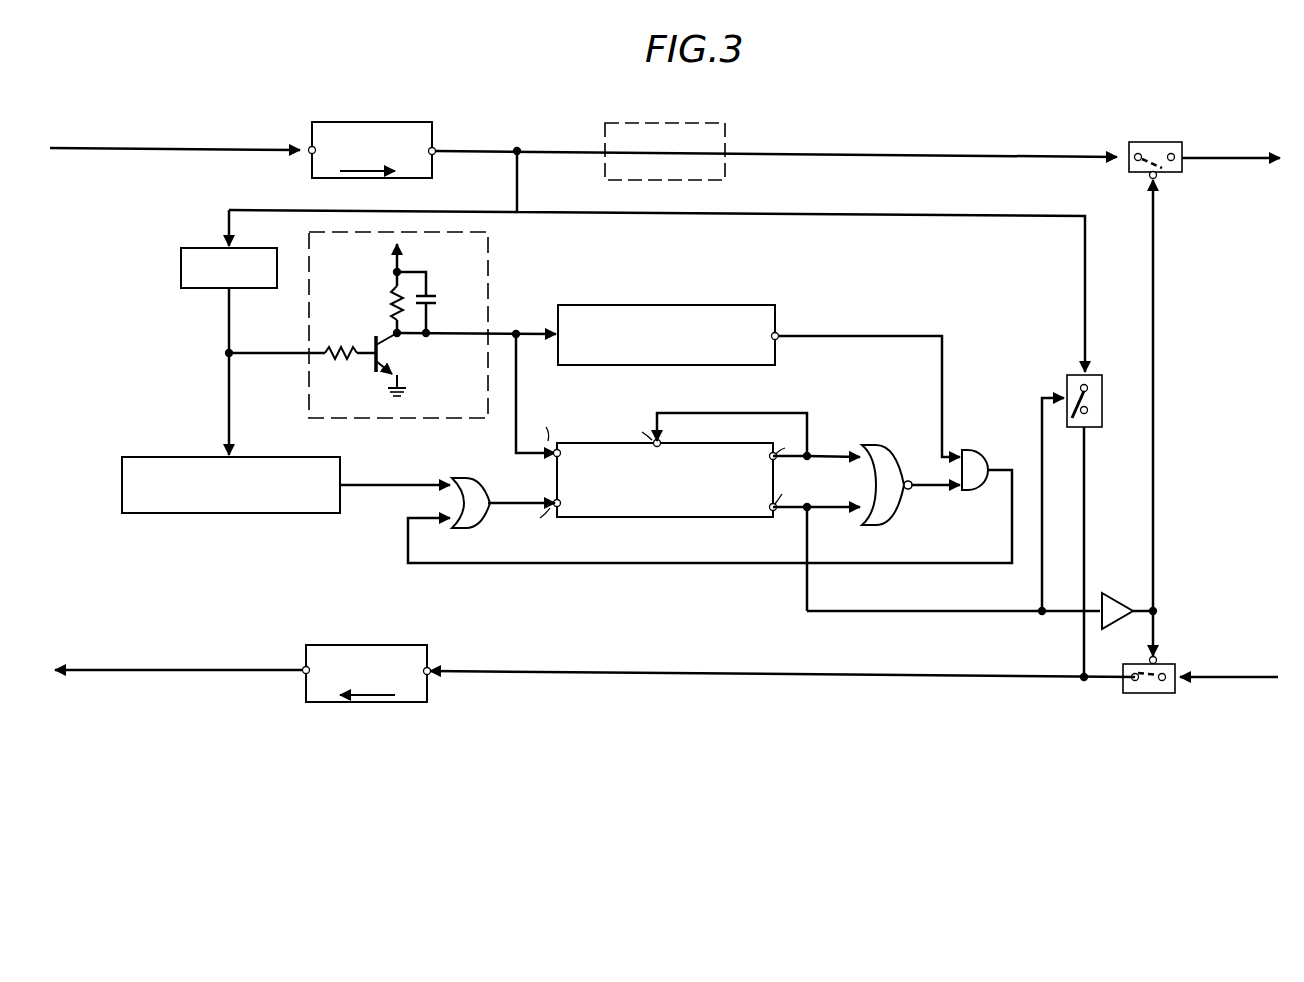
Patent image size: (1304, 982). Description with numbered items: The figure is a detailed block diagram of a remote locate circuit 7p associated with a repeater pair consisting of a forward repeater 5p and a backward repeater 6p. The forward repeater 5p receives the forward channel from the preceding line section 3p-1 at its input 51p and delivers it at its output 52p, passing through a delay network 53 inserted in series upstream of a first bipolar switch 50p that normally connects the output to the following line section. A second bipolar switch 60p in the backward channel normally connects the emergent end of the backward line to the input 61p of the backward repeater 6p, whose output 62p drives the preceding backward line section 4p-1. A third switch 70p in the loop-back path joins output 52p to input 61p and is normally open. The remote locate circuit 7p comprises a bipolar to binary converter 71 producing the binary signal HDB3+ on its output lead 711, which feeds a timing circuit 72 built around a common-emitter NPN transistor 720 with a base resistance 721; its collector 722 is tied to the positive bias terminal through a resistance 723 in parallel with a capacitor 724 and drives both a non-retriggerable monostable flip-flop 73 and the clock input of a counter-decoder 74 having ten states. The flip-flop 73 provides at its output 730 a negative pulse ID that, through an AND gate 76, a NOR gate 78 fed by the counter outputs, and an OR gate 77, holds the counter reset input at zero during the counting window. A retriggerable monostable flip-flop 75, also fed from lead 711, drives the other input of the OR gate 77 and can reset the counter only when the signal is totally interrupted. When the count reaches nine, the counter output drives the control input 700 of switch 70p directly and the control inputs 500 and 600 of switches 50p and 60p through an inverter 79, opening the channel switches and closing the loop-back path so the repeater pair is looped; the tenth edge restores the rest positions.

The preceding forward line section 3p-1 is at (82, 142).
The preceding backward line section 4p-1 is at (80, 668).
The forward repeater 5p is at (364, 121).
The forward repeater input 51p is at (306, 146).
The forward repeater output 52p is at (436, 146).
The delay network 53 is at (676, 124).
The first bipolar switch 50p is at (1148, 142).
The control input of switch 50p 500 is at (1158, 178).
The backward repeater 6p is at (358, 644).
The backward repeater input 61p is at (430, 666).
The backward repeater output 62p is at (302, 668).
The second bipolar switch 60p is at (1166, 694).
The control input of switch 60p 600 is at (1156, 656).
The remote locate circuit 7p is at (776, 275).
The bipolar to binary converter 71 is at (181, 268).
The output lead of converter 711 is at (228, 333).
The timing circuit 72 is at (378, 325).
The NPN bipolar transistor 720 is at (396, 350).
The base resistance 721 is at (340, 337).
The collector 722 is at (392, 326).
The resistance 723 is at (392, 294).
The capacitor 724 is at (432, 302).
The non-retriggerable monostable flip-flop 73 is at (664, 296).
The monostable output 730 is at (778, 334).
The counter-decoder 74 is at (676, 530).
The retriggerable monostable flip-flop 75 is at (254, 516).
The AND gate 76 is at (976, 456).
The OR gate 77 is at (470, 476).
The NOR gate 78 is at (886, 446).
The inverter 79 is at (1126, 586).
The control input of switch 70p 700 is at (1062, 390).
The third bipolar switch 70p is at (1102, 394).
The negative pulse ID is at (873, 396).